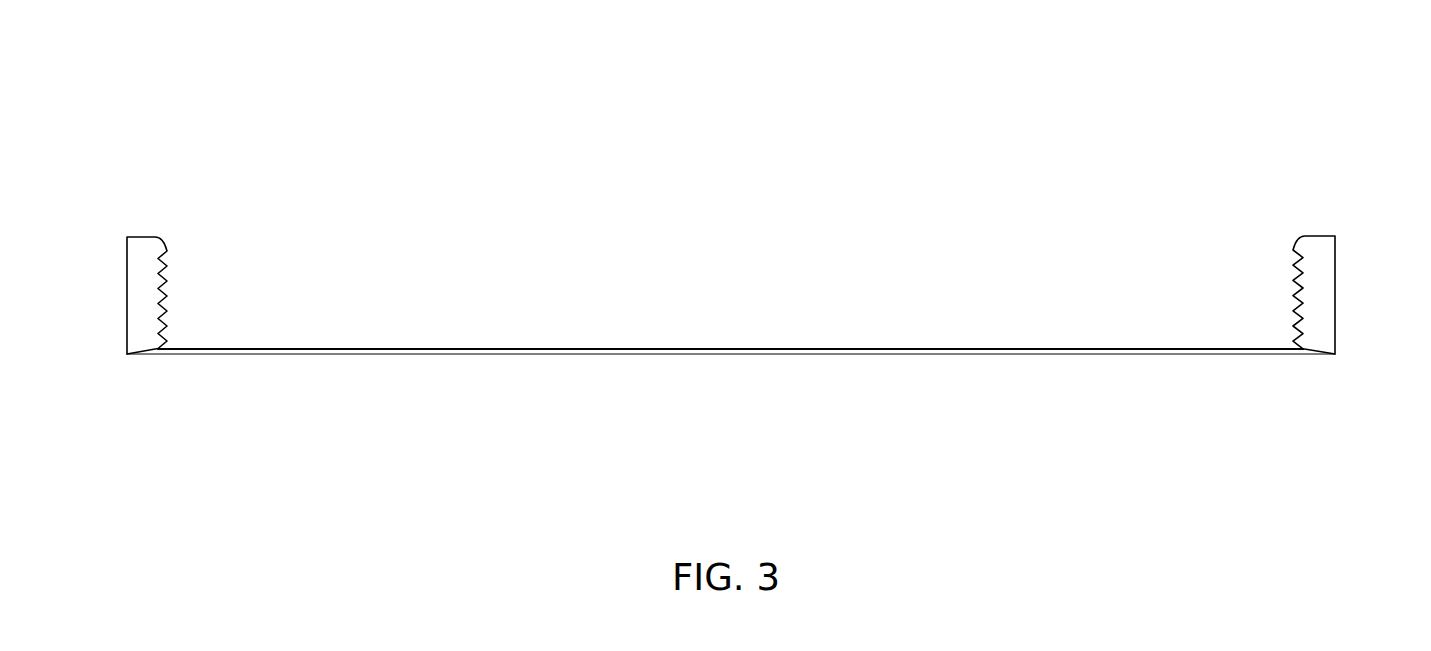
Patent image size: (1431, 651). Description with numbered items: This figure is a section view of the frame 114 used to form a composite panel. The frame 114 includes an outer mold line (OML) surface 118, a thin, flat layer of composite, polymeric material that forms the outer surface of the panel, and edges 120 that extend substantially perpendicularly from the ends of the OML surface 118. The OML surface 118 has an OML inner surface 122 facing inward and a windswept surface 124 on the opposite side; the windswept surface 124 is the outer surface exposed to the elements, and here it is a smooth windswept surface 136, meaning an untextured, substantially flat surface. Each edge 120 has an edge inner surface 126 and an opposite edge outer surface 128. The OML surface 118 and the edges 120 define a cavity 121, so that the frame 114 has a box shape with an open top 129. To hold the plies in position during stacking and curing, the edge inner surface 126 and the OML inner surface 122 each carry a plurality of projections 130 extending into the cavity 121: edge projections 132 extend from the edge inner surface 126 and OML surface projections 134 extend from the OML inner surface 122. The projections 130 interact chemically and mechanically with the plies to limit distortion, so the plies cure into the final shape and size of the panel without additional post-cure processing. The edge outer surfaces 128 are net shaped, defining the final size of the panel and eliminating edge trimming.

The frame 114 is at (476, 86).
The outer mold line (OML) surface 118 is at (765, 354).
The edge 120 is at (148, 332).
The cavity 121 is at (760, 303).
The OML inner surface 122 is at (618, 354).
The windswept surface 124 is at (478, 354).
The edge inner surface 126 is at (173, 298).
The edge outer surface 128 is at (137, 279).
The open top 129 is at (819, 240).
The projections 130 is at (1002, 310).
The edge projections 132 is at (187, 316).
The OML surface projections 134 is at (443, 349).
The smooth windswept surface 136 is at (317, 354).